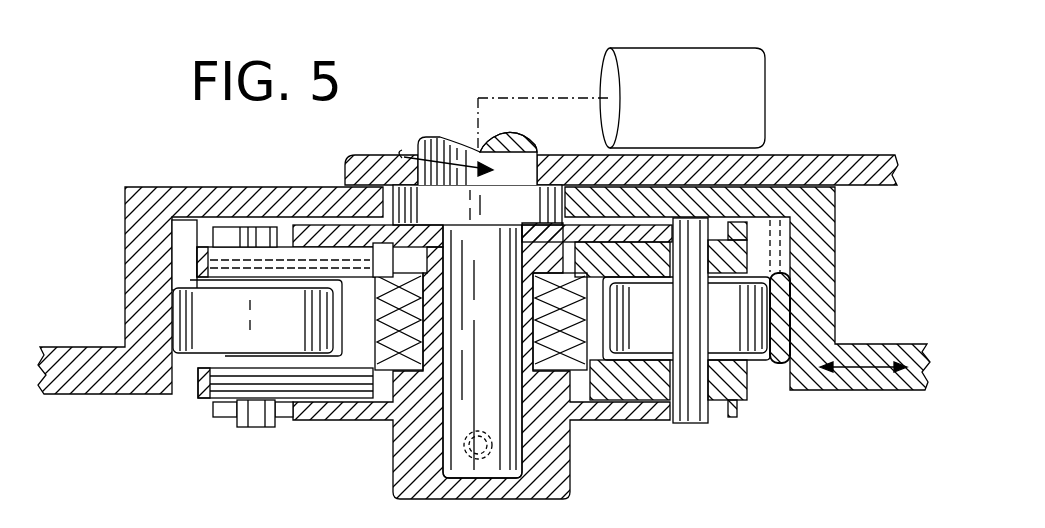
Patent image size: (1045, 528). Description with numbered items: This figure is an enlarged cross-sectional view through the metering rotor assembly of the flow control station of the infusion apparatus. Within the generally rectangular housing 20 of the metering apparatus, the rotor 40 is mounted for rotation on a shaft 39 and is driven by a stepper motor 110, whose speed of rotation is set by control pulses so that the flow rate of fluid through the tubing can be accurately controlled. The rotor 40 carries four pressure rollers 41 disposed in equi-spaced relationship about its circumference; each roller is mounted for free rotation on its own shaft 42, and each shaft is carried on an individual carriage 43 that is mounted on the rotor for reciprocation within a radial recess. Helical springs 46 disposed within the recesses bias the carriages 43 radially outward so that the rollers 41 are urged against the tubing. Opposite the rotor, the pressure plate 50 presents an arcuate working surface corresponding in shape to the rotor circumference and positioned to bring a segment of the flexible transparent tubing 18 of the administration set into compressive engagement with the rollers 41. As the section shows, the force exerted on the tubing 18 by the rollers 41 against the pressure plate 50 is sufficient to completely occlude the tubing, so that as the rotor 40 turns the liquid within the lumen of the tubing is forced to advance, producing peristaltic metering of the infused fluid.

The flexible transparent tubing 18 is at (777, 385).
The housing 20 is at (187, 205).
The shaft 39 is at (510, 436).
The rotor 40 is at (386, 489).
The pressure rollers 41 is at (285, 335).
The shaft 42 is at (253, 422).
The carriages 43 is at (205, 400).
The helical springs 46 is at (387, 290).
The pressure plate 50 is at (845, 268).
The stepper motor 110 is at (716, 46).